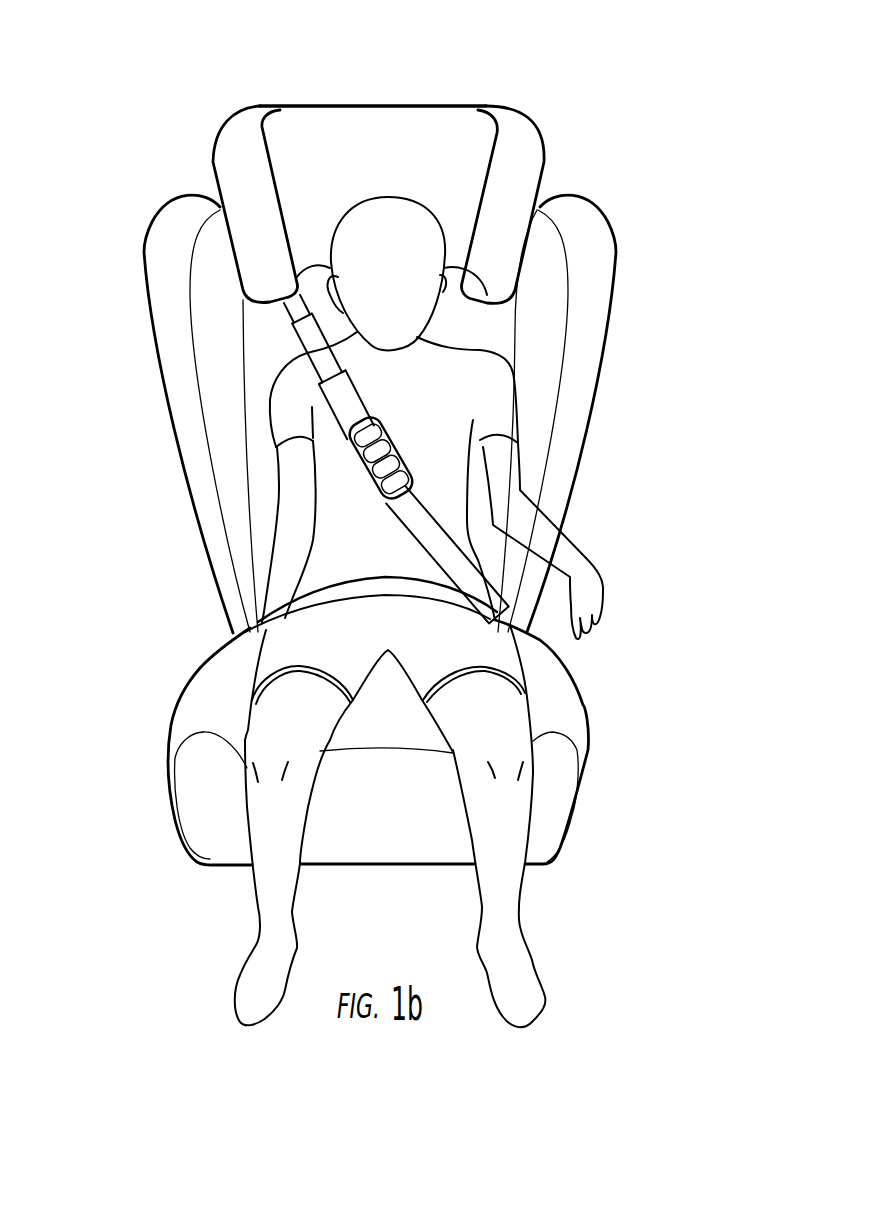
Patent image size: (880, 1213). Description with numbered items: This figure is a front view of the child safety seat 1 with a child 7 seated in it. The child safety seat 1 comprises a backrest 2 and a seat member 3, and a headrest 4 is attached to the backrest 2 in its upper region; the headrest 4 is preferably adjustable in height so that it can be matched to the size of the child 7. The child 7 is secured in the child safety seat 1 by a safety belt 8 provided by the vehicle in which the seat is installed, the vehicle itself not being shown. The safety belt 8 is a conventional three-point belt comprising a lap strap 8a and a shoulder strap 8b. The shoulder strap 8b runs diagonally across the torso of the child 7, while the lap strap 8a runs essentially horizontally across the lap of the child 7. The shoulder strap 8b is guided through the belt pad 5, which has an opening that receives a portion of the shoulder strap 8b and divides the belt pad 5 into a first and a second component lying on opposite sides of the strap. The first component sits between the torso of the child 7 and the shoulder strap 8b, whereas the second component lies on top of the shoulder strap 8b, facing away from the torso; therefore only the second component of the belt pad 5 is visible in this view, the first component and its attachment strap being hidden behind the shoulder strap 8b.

The child safety seat 1 is at (718, 195).
The backrest 2 is at (172, 302).
The seat member 3 is at (195, 783).
The headrest 4 is at (295, 130).
The belt pad 5 is at (418, 450).
The child 7 is at (452, 382).
The safety belt 8 is at (385, 545).
The lap strap 8a is at (312, 593).
The shoulder strap 8b is at (445, 555).